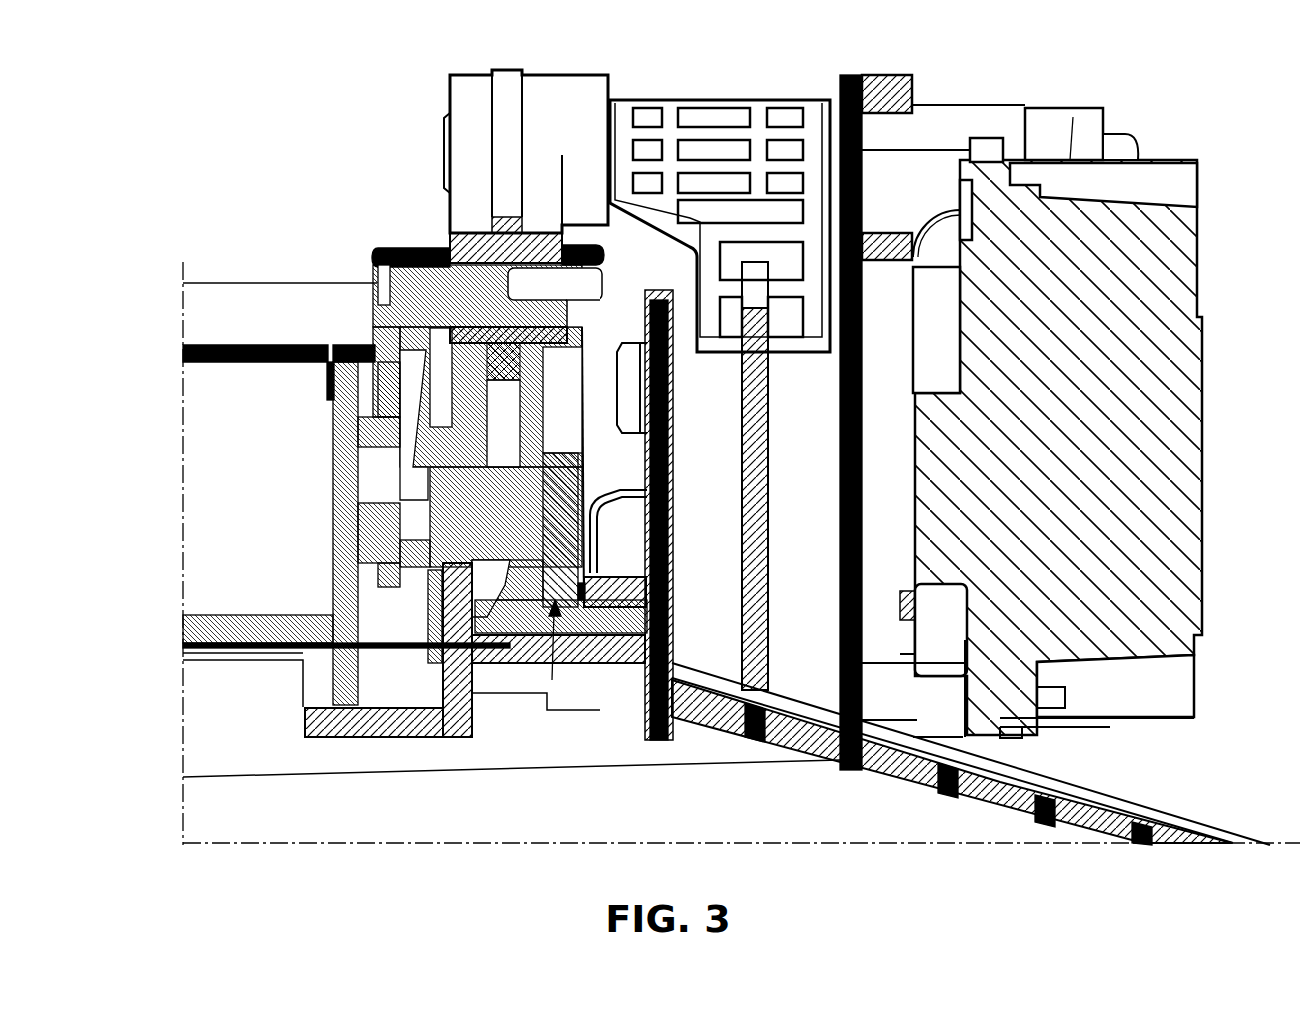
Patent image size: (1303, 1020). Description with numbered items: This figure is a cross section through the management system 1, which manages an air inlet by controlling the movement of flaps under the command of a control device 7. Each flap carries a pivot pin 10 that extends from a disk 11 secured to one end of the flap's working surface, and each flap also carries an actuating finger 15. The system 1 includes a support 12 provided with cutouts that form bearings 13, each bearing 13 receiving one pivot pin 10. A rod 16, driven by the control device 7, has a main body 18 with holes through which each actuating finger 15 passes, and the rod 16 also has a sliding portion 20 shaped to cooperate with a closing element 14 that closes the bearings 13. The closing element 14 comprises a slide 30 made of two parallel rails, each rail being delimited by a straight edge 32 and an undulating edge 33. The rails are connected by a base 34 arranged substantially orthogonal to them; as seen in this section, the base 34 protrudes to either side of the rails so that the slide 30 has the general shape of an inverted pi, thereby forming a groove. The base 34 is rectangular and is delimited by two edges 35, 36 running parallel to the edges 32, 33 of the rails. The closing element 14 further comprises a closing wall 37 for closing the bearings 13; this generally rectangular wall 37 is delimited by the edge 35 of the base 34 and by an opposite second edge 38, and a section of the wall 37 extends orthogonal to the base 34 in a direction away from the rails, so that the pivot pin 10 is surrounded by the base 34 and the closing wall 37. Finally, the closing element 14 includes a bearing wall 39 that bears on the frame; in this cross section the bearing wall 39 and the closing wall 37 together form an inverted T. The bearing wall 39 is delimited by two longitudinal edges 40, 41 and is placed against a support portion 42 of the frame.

The management system 1 is at (172, 174).
The control device 7 is at (1172, 288).
The pivot pin 10 is at (360, 543).
The disk 11 is at (462, 525).
The support 12 is at (420, 722).
The bearing 13 is at (433, 570).
The closing element 14 is at (530, 622).
The actuating finger 15 is at (440, 247).
The rod 16 is at (432, 58).
The main body 18 is at (567, 100).
The sliding portion 20 is at (507, 88).
The slide 30 is at (377, 340).
The edge 32 is at (475, 467).
The edge 33 is at (402, 257).
The base 34 is at (490, 495).
The edge 35 is at (548, 488).
The edge 36 is at (495, 488).
The closing wall 37 is at (548, 545).
The second edge 38 is at (572, 620).
The bearing wall 39 is at (502, 618).
The longitudinal edge 40 is at (672, 712).
The longitudinal edge 41 is at (460, 603).
The support portion 42 is at (690, 695).